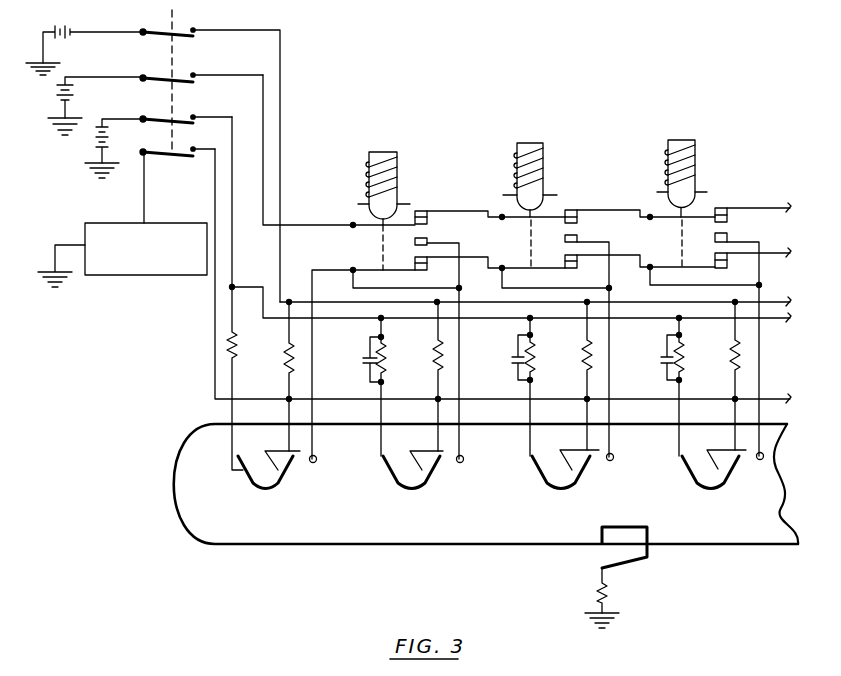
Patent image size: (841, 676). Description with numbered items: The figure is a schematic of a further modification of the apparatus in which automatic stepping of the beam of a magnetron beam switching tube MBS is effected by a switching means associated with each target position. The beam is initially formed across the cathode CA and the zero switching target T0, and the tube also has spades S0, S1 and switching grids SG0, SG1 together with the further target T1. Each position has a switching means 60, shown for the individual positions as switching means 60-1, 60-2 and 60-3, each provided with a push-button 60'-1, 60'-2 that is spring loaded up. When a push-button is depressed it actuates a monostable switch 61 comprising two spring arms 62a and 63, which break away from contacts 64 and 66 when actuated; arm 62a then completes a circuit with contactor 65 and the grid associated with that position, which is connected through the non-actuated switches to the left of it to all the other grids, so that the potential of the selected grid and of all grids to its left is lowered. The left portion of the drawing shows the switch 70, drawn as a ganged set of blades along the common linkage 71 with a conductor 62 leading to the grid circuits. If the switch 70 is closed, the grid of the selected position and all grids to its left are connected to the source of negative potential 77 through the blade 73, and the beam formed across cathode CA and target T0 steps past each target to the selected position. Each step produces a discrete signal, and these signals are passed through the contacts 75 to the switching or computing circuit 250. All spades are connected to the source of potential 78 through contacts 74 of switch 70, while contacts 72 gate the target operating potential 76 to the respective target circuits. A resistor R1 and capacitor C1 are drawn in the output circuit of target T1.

The target operating potential 76 is at (74, 30).
The ganged switch linkage (dashed) 71 is at (169, 17).
The switch 70 is at (207, 19).
The contacts 72 is at (193, 38).
The switch 73 is at (163, 72).
The source of negative potential 77 is at (69, 100).
The contacts 74 is at (183, 118).
The source of potential 78 is at (96, 148).
The contacts 75 is at (187, 148).
The conductor 62 is at (281, 152).
The switching or computing circuit 250 is at (110, 223).
The switching means 60 is at (393, 160).
The push-button 60'-1 is at (411, 165).
The switching means 60-1 is at (398, 197).
The push-button 60'-2 is at (557, 172).
The switching means 60-2 is at (561, 173).
The switching means 60-3 is at (718, 168).
The spring arm 62a is at (360, 222).
The monostable switch 61 is at (357, 248).
The contact 64 is at (433, 210).
The contactor 65 is at (437, 243).
The contact 66 is at (468, 257).
The spring arm 63 is at (392, 271).
The resistor R1 is at (388, 361).
The capacitor C1 is at (364, 360).
The zero switching target T0 is at (282, 447).
The spade S0 is at (278, 490).
The grid SG0 is at (334, 470).
The switching target T1 is at (426, 447).
The spade S1 is at (426, 490).
The grid SG1 is at (481, 470).
The magnetron beam switching tube MBS is at (248, 546).
The cathode CA is at (620, 566).